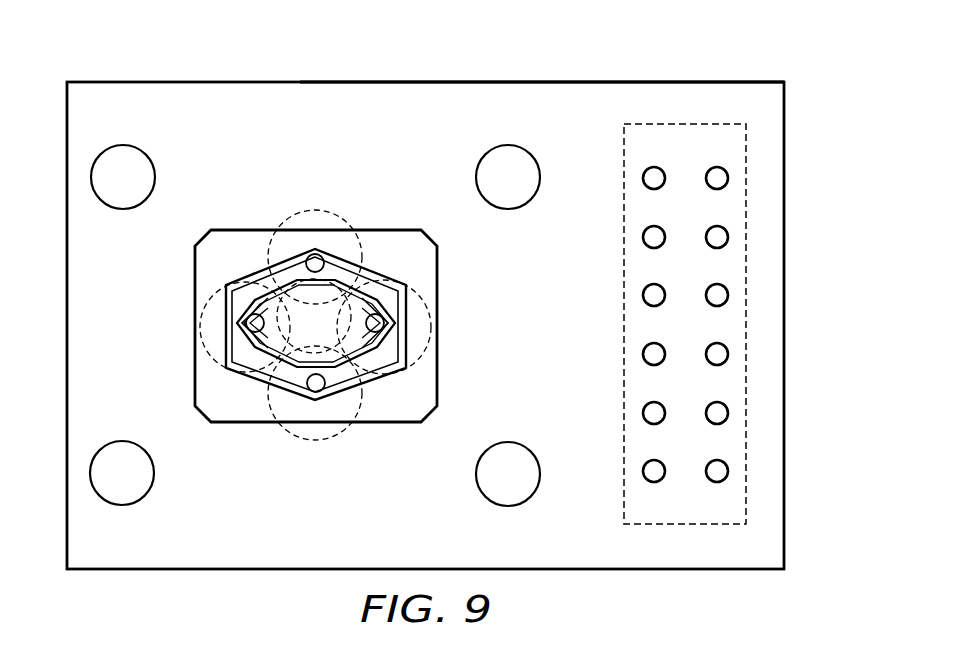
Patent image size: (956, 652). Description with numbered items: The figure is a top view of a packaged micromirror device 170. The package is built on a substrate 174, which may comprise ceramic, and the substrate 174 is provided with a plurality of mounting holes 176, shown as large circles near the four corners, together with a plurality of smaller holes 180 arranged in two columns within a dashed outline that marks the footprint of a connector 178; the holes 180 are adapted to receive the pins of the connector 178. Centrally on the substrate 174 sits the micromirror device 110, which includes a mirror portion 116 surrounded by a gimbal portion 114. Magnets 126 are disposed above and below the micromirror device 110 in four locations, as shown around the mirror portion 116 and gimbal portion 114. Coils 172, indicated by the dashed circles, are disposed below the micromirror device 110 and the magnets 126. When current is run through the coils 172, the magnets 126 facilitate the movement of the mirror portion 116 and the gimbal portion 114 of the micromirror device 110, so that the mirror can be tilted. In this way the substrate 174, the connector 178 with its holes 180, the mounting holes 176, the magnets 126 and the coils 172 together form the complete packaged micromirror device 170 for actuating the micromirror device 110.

The micromirror device 110 is at (191, 313).
The gimbal portion 114 is at (382, 352).
The mirror portion 116 is at (325, 338).
The magnets 126 is at (306, 257).
The packaged micromirror device 170 is at (276, 56).
The coils 172 is at (322, 210).
The substrate 174 is at (564, 98).
The mounting holes 176 is at (488, 167).
The connector 178 is at (705, 124).
The holes 180 is at (728, 176).